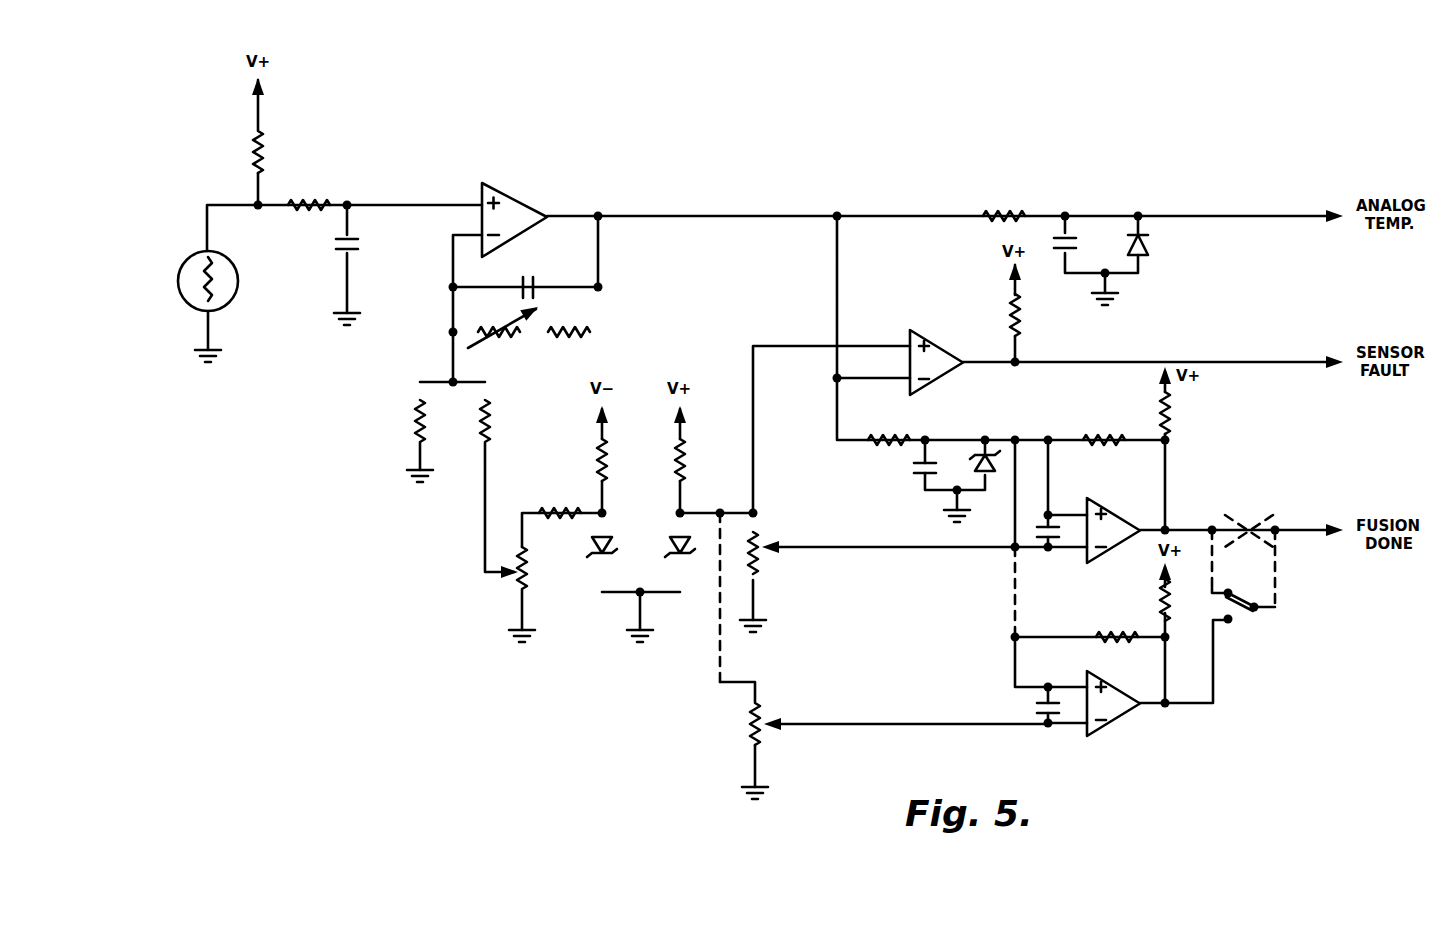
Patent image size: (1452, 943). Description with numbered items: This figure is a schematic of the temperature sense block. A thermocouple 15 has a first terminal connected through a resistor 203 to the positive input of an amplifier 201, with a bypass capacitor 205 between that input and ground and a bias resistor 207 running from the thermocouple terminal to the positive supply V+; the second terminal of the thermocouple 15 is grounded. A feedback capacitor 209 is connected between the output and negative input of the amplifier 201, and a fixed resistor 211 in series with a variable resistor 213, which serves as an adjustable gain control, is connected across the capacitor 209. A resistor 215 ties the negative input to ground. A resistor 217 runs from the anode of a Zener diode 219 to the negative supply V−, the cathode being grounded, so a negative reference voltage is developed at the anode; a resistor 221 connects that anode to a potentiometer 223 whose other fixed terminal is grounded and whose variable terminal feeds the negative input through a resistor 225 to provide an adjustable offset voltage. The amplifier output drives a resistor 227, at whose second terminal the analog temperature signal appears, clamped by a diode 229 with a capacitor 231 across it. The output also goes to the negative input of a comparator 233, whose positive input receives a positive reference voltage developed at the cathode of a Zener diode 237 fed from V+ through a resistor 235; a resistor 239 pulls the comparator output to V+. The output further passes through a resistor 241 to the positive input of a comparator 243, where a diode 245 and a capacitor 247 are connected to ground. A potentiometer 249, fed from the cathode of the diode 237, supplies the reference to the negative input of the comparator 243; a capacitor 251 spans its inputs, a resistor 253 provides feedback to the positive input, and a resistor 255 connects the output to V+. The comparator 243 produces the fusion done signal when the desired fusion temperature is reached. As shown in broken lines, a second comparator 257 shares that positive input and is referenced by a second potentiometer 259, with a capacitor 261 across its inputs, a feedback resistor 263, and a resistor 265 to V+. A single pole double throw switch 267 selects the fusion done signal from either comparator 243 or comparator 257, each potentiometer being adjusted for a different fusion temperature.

The thermocouple 15 is at (237, 270).
The amplifier 201 is at (506, 196).
The resistor 203 is at (306, 199).
The bypass capacitor 205 is at (340, 252).
The bias resistor 207 is at (264, 143).
The feedback capacitor 209 is at (533, 276).
The fixed resistor 211 is at (584, 338).
The variable resistor 213 is at (512, 342).
The resistor 215 is at (412, 420).
The resistor 217 is at (604, 449).
The Zener diode 219 is at (598, 560).
The resistor 221 is at (558, 507).
The potentiometer 223 is at (518, 582).
The resistor 225 is at (488, 419).
The resistor 227 is at (1007, 203).
The diode 229 is at (1153, 262).
The capacitor 231 is at (1064, 262).
The comparator 233 is at (920, 329).
The resistor 235 is at (684, 449).
The Zener diode 237 is at (674, 562).
The resistor 239 is at (1010, 312).
The resistor 241 is at (886, 437).
The comparator 243 is at (1127, 496).
The diode 245 is at (990, 438).
The capacitor 247 is at (918, 486).
The potentiometer 249 is at (760, 542).
The capacitor 251 is at (1038, 550).
The resistor 253 is at (1104, 437).
The resistor 255 is at (1172, 409).
The second comparator 257 is at (1115, 726).
The second potentiometer 259 is at (758, 704).
The capacitor 261 is at (1038, 690).
The resistor 263 is at (1116, 627).
The resistor 265 is at (1160, 598).
The single pole double throw switch 267 is at (1242, 612).